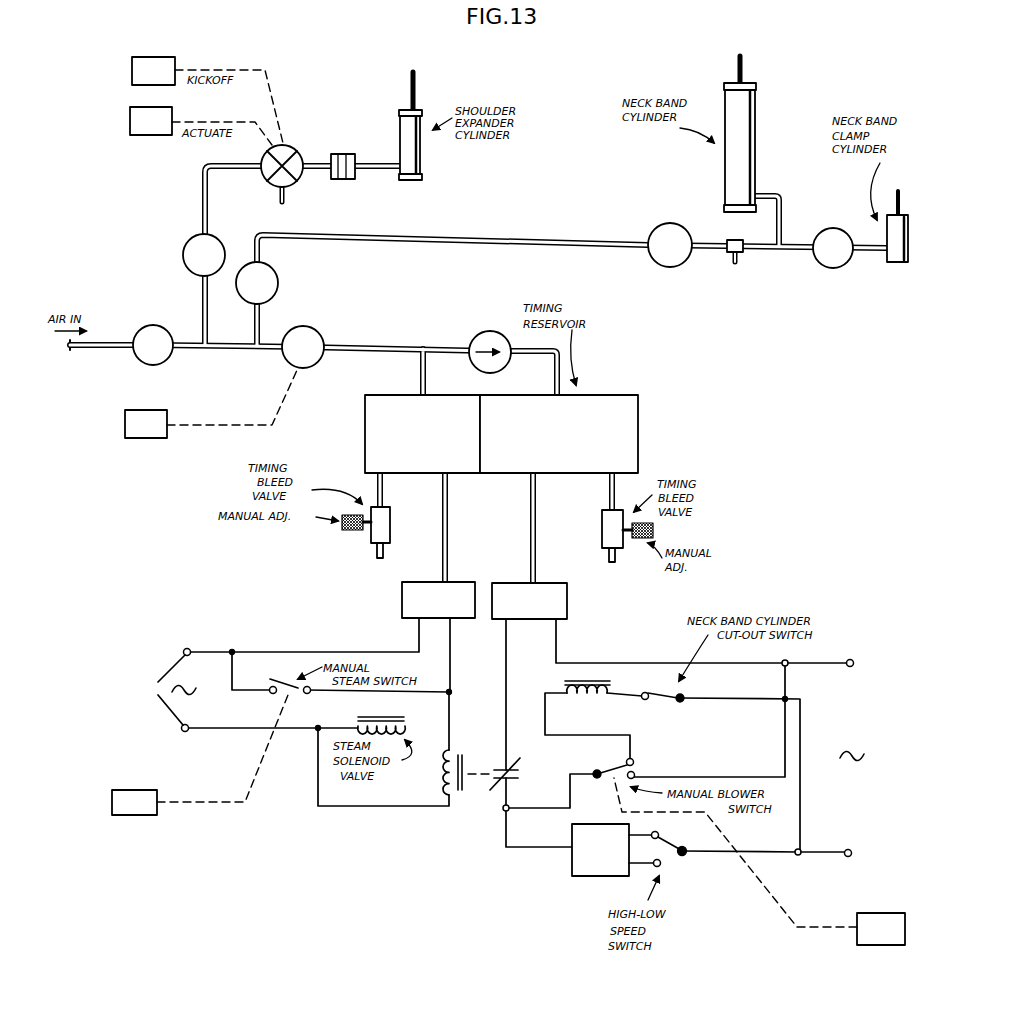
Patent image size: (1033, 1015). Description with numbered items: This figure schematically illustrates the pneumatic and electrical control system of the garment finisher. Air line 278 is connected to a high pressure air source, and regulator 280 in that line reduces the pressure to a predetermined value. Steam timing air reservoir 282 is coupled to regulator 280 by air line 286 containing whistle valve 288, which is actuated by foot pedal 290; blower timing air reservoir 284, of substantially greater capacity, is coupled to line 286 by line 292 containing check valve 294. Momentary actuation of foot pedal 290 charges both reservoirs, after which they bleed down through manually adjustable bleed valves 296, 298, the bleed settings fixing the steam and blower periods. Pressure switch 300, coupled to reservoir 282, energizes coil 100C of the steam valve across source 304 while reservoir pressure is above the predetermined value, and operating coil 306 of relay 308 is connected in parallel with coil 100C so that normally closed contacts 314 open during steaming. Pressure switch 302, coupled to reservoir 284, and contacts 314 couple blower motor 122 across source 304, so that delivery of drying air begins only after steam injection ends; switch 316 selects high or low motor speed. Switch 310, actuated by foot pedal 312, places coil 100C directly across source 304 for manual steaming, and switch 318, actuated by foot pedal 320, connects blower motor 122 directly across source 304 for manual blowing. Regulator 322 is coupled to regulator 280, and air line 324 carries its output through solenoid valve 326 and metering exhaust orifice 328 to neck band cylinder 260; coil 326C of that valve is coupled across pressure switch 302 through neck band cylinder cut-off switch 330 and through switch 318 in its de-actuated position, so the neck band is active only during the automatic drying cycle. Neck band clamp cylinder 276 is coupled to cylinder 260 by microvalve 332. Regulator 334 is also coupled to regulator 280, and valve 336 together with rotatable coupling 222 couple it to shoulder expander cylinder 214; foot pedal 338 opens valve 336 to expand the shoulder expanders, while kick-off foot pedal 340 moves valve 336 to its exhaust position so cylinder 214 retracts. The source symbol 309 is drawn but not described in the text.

The kick-off foot pedal 340 is at (161, 53).
The foot pedal 338 is at (155, 138).
The valve 336 is at (288, 143).
The rotatable coupling 222 is at (351, 181).
The shoulder expander cylinder 214 is at (421, 157).
The regulator 334 is at (188, 238).
The air line 324 is at (502, 237).
The solenoid valve 326 is at (665, 221).
The neck band cylinder 260 is at (757, 132).
The metering exhaust orifice 328 is at (745, 254).
The neck band clamp cylinder 276 is at (886, 237).
The microvalve 332 is at (836, 270).
The regulator 280 is at (152, 320).
The air line 278 is at (99, 350).
The regulator 322 is at (276, 275).
The whistle valve 288 is at (313, 326).
The air line 286 is at (380, 344).
The check valve 294 is at (487, 331).
The line 292 is at (538, 358).
The steam timing air reservoir 282 is at (365, 424).
The blower timing air reservoir 284 is at (638, 420).
The foot pedal 290 is at (147, 440).
The manually adjustable bleed valve 296 is at (359, 547).
The manually adjustable bleed valve 298 is at (631, 553).
The pressure switch 300 is at (401, 597).
The pressure switch 302 is at (568, 604).
The power source 309 is at (162, 690).
The switch 310 is at (306, 695).
The coil of steam valve 100C is at (370, 711).
The operating coil of relay 306 is at (440, 773).
The foot pedal 312 is at (140, 818).
The normally closed contacts of relay 314 is at (518, 775).
The relay 308 is at (475, 793).
The coil of solenoid valve 326C is at (601, 678).
The neck band cylinder cut-off switch 330 is at (662, 701).
The switch 318 is at (638, 768).
The source of energizing potential 304 is at (851, 667).
The blower motor 122 is at (574, 878).
The manually operated switch 316 is at (669, 857).
The foot pedal 320 is at (882, 947).